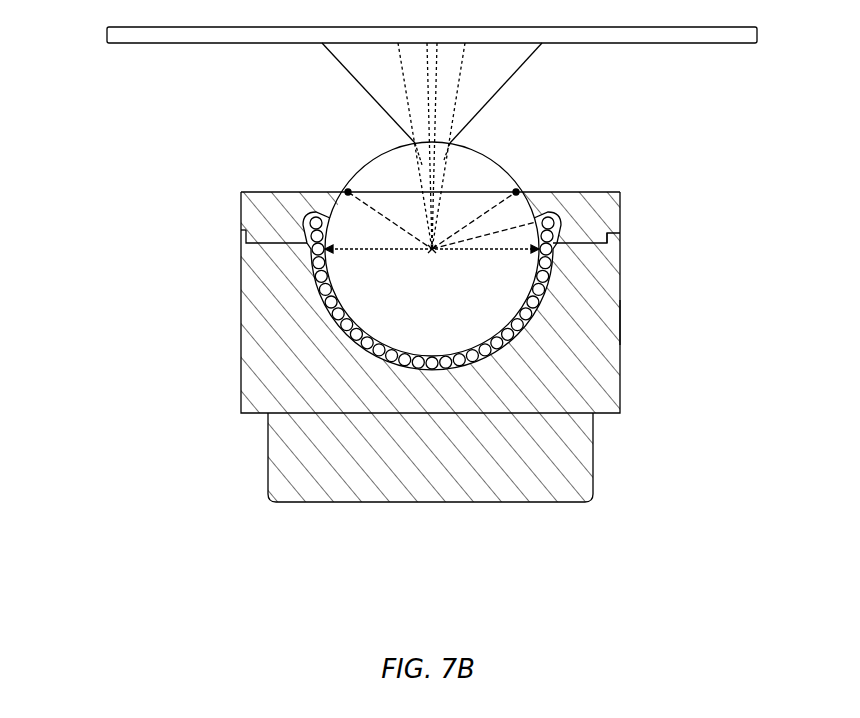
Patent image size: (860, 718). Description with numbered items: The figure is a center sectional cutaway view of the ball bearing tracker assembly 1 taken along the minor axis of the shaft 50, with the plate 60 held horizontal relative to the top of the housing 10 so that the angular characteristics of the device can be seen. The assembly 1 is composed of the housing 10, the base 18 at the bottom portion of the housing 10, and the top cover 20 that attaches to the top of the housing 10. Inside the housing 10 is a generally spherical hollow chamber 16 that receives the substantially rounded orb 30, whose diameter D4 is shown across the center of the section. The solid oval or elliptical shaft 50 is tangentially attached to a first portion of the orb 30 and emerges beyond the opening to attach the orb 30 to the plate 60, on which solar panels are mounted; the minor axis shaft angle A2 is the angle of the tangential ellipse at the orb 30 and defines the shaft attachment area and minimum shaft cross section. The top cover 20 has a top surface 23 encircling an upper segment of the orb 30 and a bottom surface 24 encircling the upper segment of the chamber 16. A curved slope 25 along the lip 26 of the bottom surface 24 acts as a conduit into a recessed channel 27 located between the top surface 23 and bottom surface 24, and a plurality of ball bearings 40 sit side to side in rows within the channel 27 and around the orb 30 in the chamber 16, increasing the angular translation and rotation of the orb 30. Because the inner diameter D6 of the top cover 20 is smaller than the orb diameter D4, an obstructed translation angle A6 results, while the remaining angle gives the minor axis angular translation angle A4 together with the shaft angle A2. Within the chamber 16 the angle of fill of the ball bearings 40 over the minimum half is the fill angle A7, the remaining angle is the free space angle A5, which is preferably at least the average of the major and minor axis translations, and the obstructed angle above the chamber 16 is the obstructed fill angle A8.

The ball bearing tracker assembly 1 is at (122, 252).
The housing 10 is at (241, 362).
The spherical hollow chamber 16 is at (565, 384).
The base 18 is at (268, 455).
The top cover 20 is at (598, 192).
The top surface 23 is at (268, 192).
The bottom surface 24 is at (609, 266).
The curved slope 25 is at (620, 321).
The lip 26 is at (310, 262).
The recessed channel 27 is at (241, 203).
The orb 30 is at (365, 158).
The ball bearing 40 is at (550, 298).
The shaft 50 is at (501, 87).
The plate 60 is at (122, 44).
The minor axis shaft angle A2 is at (412, 147).
The angular translation angle A4 is at (428, 173).
The free space angle A5 is at (520, 237).
The obstructed translation angle A6 is at (352, 233).
The fill angle A7 is at (512, 258).
The obstructed fill angle A8 is at (484, 220).
The diameter of the orb D4 is at (432, 250).
The inner diameter of the top cover D6 is at (400, 225).